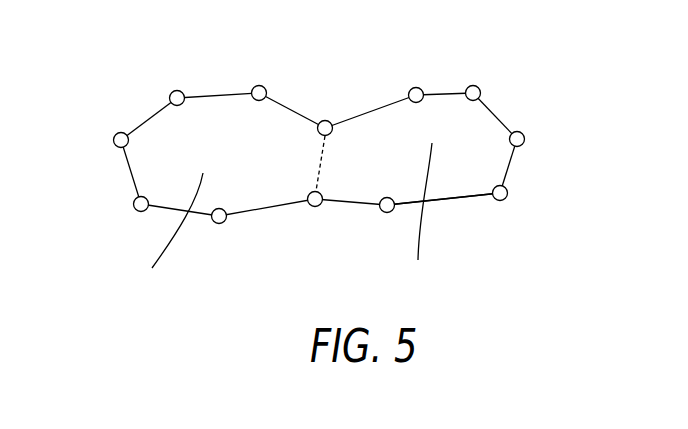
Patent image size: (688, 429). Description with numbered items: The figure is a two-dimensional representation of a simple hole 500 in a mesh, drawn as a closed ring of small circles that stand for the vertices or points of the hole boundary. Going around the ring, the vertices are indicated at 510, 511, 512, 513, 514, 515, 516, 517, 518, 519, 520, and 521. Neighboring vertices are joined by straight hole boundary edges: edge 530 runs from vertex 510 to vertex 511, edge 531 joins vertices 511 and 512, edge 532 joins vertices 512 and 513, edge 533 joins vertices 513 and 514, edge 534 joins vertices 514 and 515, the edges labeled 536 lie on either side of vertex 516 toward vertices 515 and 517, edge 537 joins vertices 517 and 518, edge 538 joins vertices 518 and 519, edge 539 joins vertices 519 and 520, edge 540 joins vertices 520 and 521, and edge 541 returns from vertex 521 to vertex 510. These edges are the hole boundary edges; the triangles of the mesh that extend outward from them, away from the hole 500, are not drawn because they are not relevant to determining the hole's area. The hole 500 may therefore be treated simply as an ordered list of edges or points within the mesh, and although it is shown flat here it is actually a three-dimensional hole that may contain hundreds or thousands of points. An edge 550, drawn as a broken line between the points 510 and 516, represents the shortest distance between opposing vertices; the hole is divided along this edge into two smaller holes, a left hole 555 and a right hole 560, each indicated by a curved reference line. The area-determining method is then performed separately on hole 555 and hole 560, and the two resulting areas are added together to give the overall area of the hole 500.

The hole 500 is at (439, 188).
The vertex 510 is at (325, 120).
The vertex 511 is at (416, 88).
The vertex 512 is at (480, 88).
The vertex 513 is at (525, 139).
The vertex 514 is at (508, 196).
The vertex 515 is at (386, 213).
The vertex 516 is at (313, 207).
The vertex 517 is at (219, 224).
The vertex 518 is at (134, 205).
The vertex 519 is at (114, 140).
The vertex 520 is at (170, 94).
The vertex 521 is at (259, 86).
The edge 530 is at (387, 105).
The edge 531 is at (450, 94).
The edge 532 is at (500, 121).
The edge 533 is at (509, 163).
The edge 534 is at (478, 196).
The edge 536 is at (350, 202).
The edge 537 is at (170, 209).
The edge 538 is at (131, 172).
The edge 539 is at (150, 119).
The edge 540 is at (217, 93).
The edge 541 is at (284, 106).
The edge 550 is at (322, 160).
The hole 555 is at (165, 233).
The hole 560 is at (412, 213).